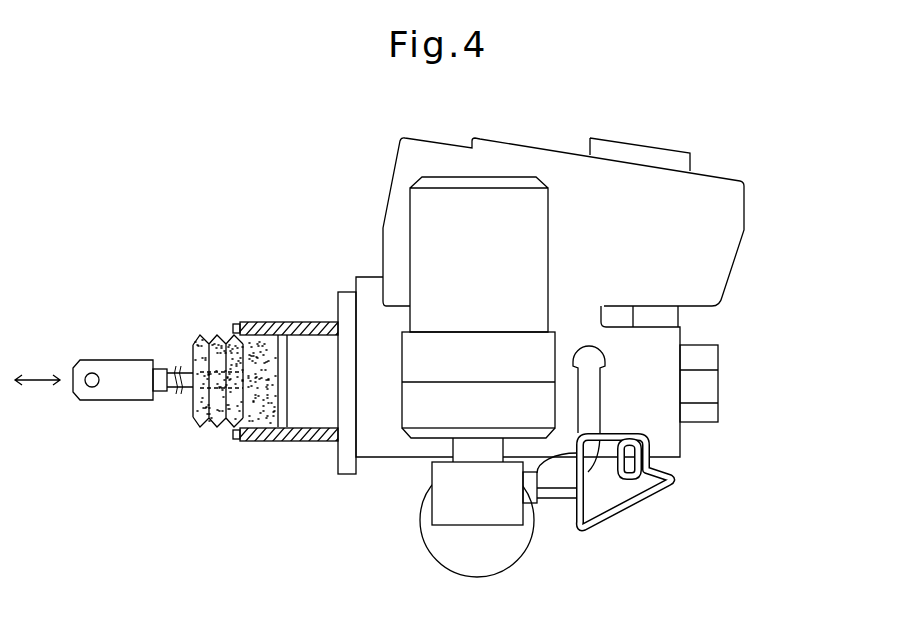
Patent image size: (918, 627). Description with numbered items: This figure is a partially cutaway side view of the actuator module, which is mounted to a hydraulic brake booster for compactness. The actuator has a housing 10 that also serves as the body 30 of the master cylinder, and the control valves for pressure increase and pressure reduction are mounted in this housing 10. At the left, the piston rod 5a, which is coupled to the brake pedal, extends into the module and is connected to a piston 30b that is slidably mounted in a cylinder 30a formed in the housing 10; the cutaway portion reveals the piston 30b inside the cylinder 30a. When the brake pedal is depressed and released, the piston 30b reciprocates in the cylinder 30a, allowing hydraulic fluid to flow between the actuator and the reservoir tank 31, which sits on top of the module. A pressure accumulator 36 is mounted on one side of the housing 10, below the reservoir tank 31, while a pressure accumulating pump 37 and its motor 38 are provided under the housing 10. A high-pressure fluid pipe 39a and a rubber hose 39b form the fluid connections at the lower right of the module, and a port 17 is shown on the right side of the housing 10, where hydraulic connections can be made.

The piston rod 5a is at (120, 378).
The housing 10 is at (386, 446).
The body 30 is at (241, 381).
The cylinder 30a is at (316, 340).
The piston 30b is at (295, 440).
The reservoir tank 31 is at (702, 210).
The pressure accumulator 36 is at (482, 217).
The pressure accumulating pump 37 is at (500, 518).
The motor 38 is at (452, 543).
The high-pressure fluid pipe 39a is at (625, 505).
The rubber hose 39b is at (592, 380).
The hydraulic port 17 is at (718, 375).